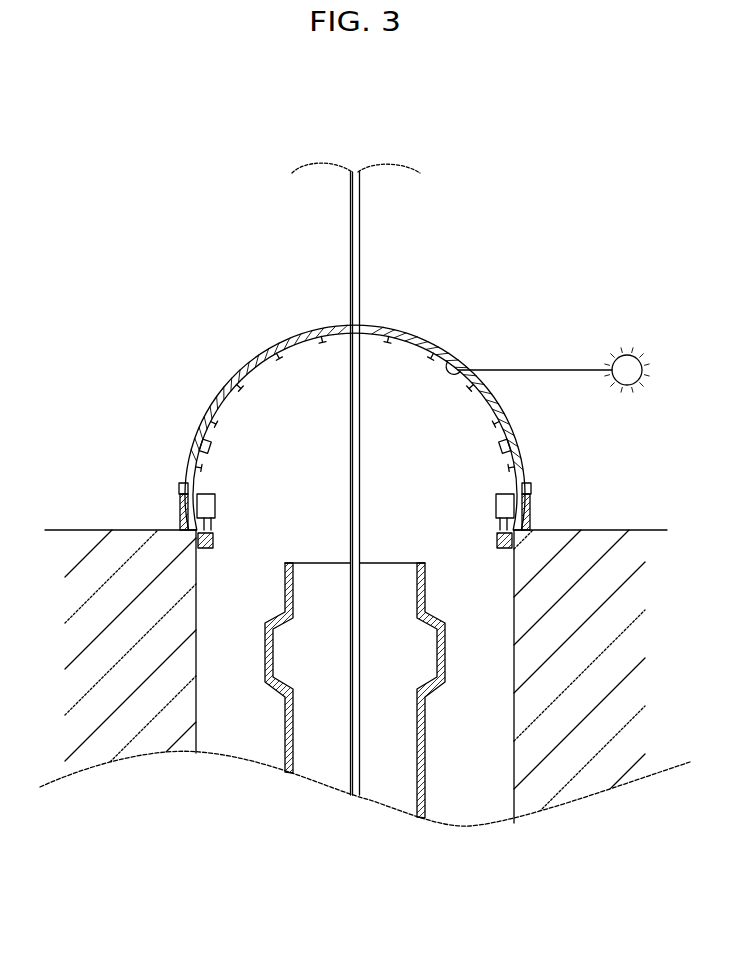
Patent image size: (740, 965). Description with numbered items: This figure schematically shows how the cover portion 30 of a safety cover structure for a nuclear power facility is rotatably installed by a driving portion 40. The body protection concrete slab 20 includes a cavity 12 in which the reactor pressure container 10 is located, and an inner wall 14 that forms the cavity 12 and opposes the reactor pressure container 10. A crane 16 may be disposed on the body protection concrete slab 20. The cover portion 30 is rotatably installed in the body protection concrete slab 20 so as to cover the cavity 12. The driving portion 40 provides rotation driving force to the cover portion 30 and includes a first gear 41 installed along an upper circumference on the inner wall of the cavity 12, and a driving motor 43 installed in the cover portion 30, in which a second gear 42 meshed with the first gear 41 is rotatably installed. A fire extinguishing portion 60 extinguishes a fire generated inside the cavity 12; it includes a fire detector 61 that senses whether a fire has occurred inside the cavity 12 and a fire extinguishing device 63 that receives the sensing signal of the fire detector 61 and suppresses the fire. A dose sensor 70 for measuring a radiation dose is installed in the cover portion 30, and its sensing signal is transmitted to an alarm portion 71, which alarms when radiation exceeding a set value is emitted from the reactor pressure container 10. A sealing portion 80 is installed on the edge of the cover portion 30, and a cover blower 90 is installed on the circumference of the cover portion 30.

The reactor pressure container 10 is at (436, 782).
The cavity 12 is at (238, 686).
The inner wall 14 is at (197, 707).
The crane 16 is at (362, 210).
The body protection concrete slab 20 is at (135, 715).
The cover portion 30 is at (493, 397).
The driving portion 40 is at (355, 533).
The first gear 41 is at (355, 554).
The second gear 42 is at (214, 540).
The driving motor 43 is at (210, 505).
The fire extinguishing portion 60 is at (354, 373).
The fire detector 61 is at (203, 448).
The fire extinguishing device 63 is at (312, 358).
The dose sensor 70 is at (438, 372).
The alarm portion 71 is at (622, 352).
The sealing portion 80 is at (180, 506).
The cover blower 90 is at (178, 488).